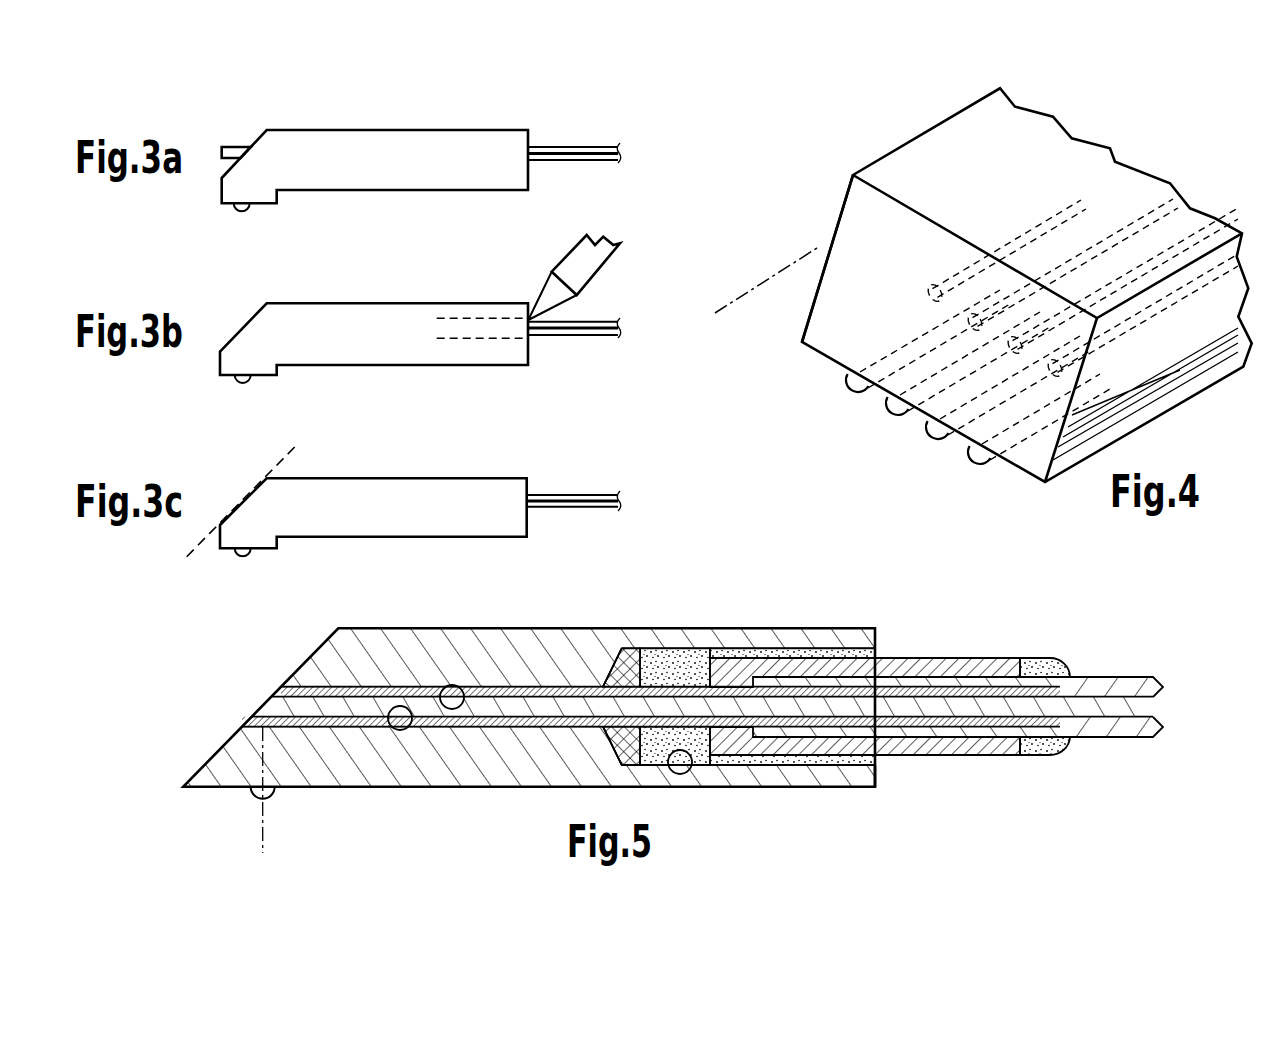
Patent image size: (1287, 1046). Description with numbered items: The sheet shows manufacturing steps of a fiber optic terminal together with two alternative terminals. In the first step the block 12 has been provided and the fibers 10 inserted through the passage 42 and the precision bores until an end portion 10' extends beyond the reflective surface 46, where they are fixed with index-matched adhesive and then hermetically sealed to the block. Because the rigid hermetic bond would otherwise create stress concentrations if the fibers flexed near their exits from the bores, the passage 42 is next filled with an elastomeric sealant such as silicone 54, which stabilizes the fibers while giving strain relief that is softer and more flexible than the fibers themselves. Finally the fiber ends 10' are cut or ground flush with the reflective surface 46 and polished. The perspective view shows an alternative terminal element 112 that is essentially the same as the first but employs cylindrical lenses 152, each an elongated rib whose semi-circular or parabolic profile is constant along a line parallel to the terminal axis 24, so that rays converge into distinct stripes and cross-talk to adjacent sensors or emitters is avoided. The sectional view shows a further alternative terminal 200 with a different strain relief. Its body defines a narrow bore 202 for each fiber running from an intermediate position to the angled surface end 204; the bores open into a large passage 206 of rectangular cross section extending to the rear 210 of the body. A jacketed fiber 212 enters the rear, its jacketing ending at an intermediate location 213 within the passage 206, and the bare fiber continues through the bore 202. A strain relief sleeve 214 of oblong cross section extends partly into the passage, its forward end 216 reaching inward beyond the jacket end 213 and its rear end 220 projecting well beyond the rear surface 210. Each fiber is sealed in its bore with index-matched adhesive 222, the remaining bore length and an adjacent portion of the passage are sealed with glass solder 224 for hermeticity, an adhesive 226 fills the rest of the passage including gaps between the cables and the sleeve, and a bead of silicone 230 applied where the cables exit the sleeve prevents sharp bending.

In FIG. 3A, the fiber 10 is at (576, 121).
In FIG. 3B, the fiber 10 is at (584, 354).
In FIG. 3C, the fiber 10 is at (576, 469).
In FIG. 4, the fiber 10 is at (1049, 316).
In FIG. 3A, the end portion of fiber 10' is at (239, 125).
In FIG. 3A, the block 12 is at (398, 127).
In FIG. 3B, the block 12 is at (398, 301).
In FIG. 3C, the block 12 is at (398, 476).
In FIG. 4, the terminal axis 24 is at (770, 277).
In FIG. 3B, the passage 42 is at (483, 338).
In FIG. 3C, the reflective surface 46 is at (242, 500).
In FIG. 4, the reflective surface 46 is at (852, 222).
In FIG. 3B, the silicone 54 is at (597, 280).
In FIG. 4, the terminal element 112 is at (898, 127).
In FIG. 4, the cylindrical lenses 152 is at (858, 392).
In FIG. 5, the terminal 200 is at (804, 611).
In FIG. 5, the narrow bore 202 is at (400, 730).
In FIG. 5, the angled surface end 204 is at (313, 652).
In FIG. 5, the large passage 206 is at (680, 774).
In FIG. 5, the rear of the body 210 is at (875, 787).
In FIG. 5, the jacketed fiber 212 is at (1133, 677).
In FIG. 5, the intermediate location 213 is at (742, 677).
In FIG. 5, the strain relief sleeve 214 is at (947, 657).
In FIG. 5, the forward end of sleeve 216 is at (712, 665).
In FIG. 5, the rear end of sleeve 220 is at (1030, 657).
In FIG. 5, the index-matched adhesive 222 is at (452, 685).
In FIG. 5, the glass solder 224 is at (612, 648).
In FIG. 5, the adhesive 226 is at (670, 655).
In FIG. 5, the bead of silicone 230 is at (1053, 756).